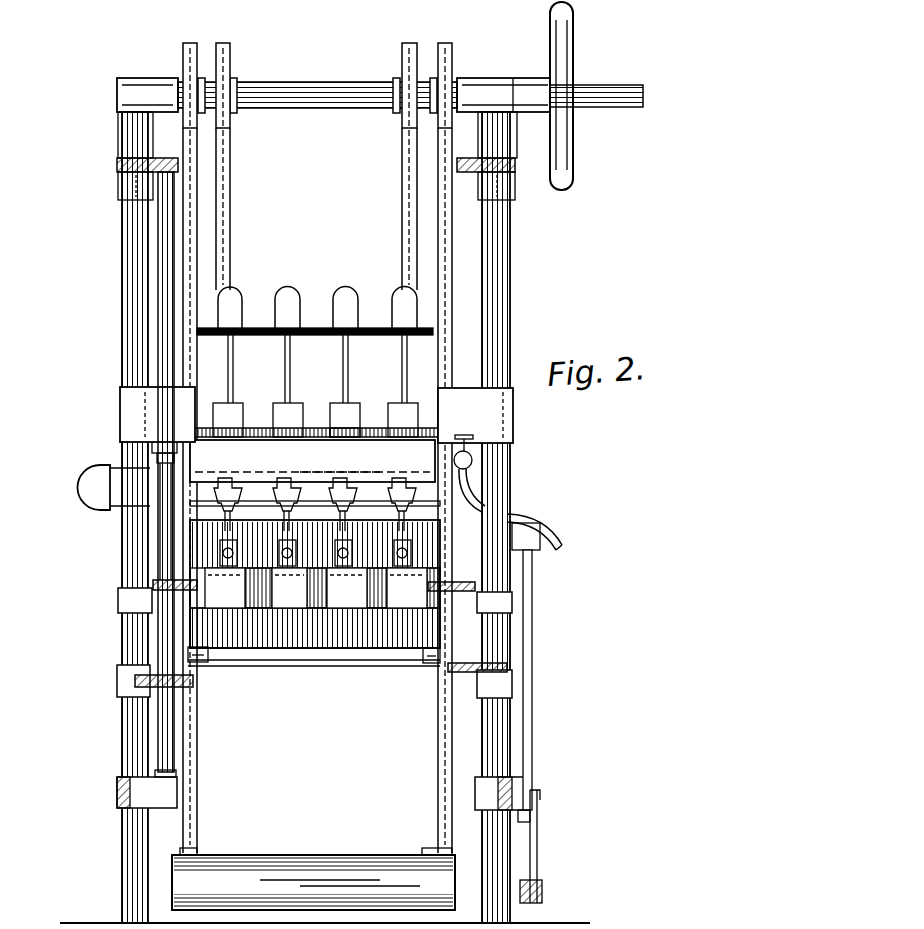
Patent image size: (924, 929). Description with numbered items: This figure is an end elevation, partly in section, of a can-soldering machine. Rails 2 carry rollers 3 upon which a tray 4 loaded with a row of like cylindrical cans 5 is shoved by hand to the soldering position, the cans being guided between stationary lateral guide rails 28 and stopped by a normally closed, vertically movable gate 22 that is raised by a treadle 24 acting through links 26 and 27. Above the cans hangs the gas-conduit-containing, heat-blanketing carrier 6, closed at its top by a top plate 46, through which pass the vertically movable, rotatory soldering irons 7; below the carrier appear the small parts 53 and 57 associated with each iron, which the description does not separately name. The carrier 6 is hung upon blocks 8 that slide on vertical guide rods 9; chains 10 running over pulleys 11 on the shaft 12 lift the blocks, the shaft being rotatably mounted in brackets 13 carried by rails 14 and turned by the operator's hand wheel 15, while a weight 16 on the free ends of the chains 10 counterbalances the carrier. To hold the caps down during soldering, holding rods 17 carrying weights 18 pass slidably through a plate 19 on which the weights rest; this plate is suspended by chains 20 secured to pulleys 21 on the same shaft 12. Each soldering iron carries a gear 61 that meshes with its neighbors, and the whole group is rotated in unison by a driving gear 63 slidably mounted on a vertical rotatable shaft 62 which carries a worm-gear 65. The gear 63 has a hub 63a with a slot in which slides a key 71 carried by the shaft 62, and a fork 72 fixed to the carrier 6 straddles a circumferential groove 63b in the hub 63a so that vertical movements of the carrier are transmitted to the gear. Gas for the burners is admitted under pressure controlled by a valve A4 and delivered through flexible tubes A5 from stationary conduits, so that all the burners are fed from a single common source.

The rails 2 is at (190, 667).
The rollers 3 is at (208, 656).
The tray 4 is at (315, 584).
The cylindrical cans 5 is at (316, 588).
The carrier 6 is at (315, 473).
The soldering irons 7 is at (242, 485).
The blocks 8 is at (120, 405).
The vertical guide rods 9 is at (137, 632).
The chains 10 is at (198, 212).
The pulleys 11 is at (183, 53).
The shaft 12 is at (333, 88).
The brackets 13 is at (130, 115).
The rails 14 is at (118, 164).
The hand wheel 15 is at (573, 160).
The weight 16 is at (352, 860).
The holding rods 17 is at (286, 372).
The weights 18 is at (238, 300).
The plate 19 is at (258, 340).
The chains 20 is at (230, 250).
The pulleys 21 is at (230, 66).
The gate 22 is at (470, 492).
The treadle 24 is at (542, 890).
The link 26 is at (537, 850).
The link 27 is at (532, 710).
The lateral guide rails 28 is at (153, 584).
The top plate 46 is at (383, 448).
The valve box 53 is at (279, 552).
The spout 57 is at (252, 515).
The gear 61 is at (342, 430).
The vertical rotatable shaft 62 is at (174, 748).
The driving gear 63 is at (135, 432).
The hub 63a is at (152, 447).
The circumferential groove 63b is at (75, 485).
The worm-gear 65 is at (193, 685).
The key 71 is at (165, 500).
The fork 72 is at (157, 458).
The valve A4 is at (473, 438).
The flexible tubes A5 is at (535, 528).